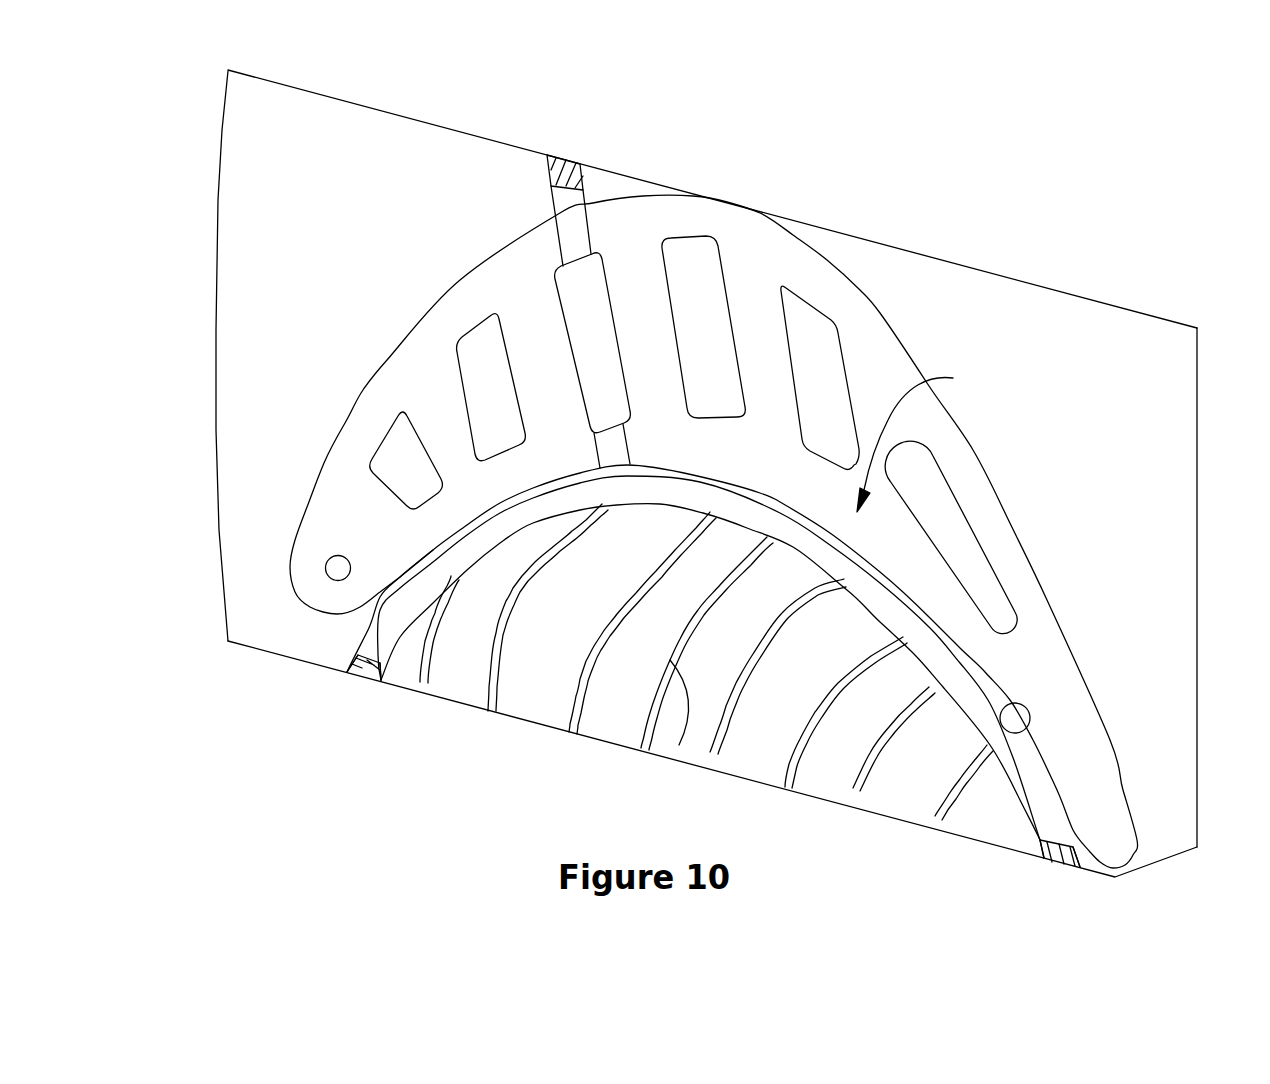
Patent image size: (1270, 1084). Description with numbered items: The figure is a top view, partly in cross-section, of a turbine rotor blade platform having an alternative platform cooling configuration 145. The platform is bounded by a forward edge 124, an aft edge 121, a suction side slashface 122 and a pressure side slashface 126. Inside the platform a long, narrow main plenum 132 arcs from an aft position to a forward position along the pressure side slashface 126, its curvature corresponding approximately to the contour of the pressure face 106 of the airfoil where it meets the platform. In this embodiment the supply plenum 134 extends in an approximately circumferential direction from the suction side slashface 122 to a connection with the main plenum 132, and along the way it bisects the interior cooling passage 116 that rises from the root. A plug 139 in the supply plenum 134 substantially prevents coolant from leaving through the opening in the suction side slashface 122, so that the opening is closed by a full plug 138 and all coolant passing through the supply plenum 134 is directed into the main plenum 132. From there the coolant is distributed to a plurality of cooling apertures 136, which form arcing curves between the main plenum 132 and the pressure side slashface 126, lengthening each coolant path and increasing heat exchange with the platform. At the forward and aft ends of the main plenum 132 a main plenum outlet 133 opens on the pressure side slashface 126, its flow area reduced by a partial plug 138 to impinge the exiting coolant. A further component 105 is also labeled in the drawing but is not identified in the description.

The mounting plate 105 is at (418, 324).
The pressure face 106 is at (1030, 733).
The interior cooling passage 116 is at (428, 474).
The aft edge 121 is at (1197, 472).
The suction side slashface 122 is at (868, 238).
The forward edge 124 is at (218, 233).
The pressure side slashface 126 is at (276, 654).
The main plenum 132 is at (763, 517).
The main plenum outlet 133 is at (357, 680).
The supply plenum 134 is at (580, 248).
The cooling apertures 136 is at (560, 742).
The plug 138 is at (385, 682).
The plug 139 is at (549, 158).
The platform cooling configuration 145 is at (927, 438).